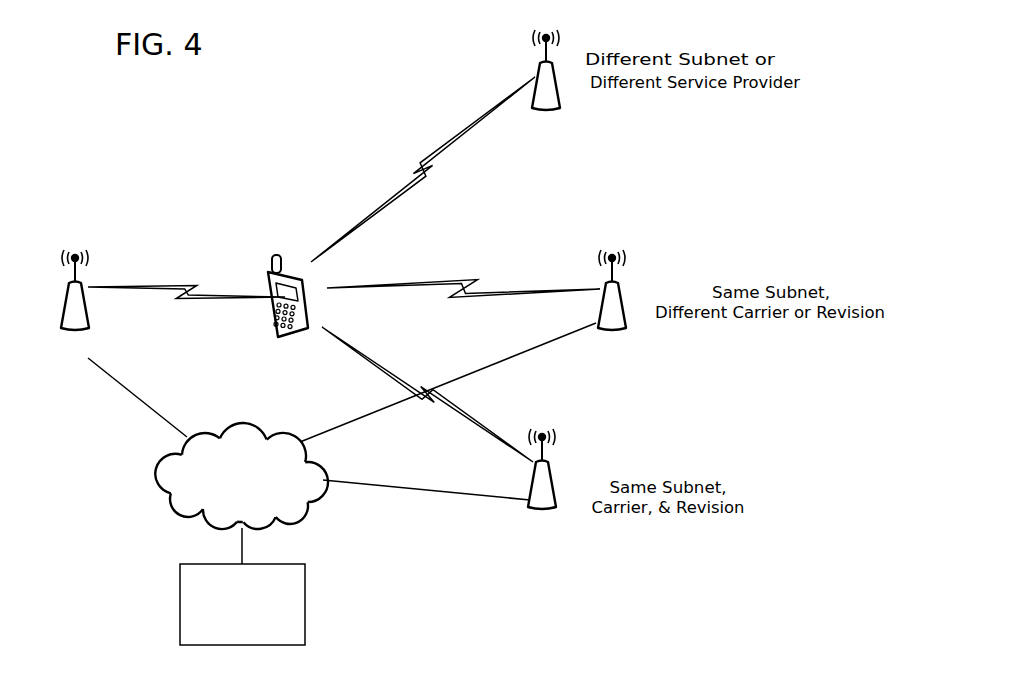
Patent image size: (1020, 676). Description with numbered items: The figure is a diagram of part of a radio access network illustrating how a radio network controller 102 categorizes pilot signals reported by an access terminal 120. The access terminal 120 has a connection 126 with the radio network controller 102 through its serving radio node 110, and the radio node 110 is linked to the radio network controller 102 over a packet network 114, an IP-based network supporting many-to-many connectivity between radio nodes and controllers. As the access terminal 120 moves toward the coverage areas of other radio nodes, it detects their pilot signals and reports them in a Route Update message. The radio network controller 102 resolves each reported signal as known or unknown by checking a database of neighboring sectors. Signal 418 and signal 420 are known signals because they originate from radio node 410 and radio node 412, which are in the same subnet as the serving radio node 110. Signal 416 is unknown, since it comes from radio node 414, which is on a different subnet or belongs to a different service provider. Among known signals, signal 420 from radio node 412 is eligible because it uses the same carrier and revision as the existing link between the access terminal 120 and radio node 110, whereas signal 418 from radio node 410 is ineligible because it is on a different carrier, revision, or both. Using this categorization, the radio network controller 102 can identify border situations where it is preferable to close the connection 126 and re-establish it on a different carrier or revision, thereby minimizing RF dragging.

The radio node 110 is at (75, 304).
The access terminal 120 is at (288, 311).
The connection 126 is at (186, 309).
The packet network 114 is at (241, 476).
The radio network controller 102 is at (242, 604).
The radio node 410 is at (610, 305).
The radio node 412 is at (543, 483).
The radio node 414 is at (545, 84).
The signal 416 is at (423, 169).
The signal 418 is at (463, 305).
The signal 420 is at (427, 394).